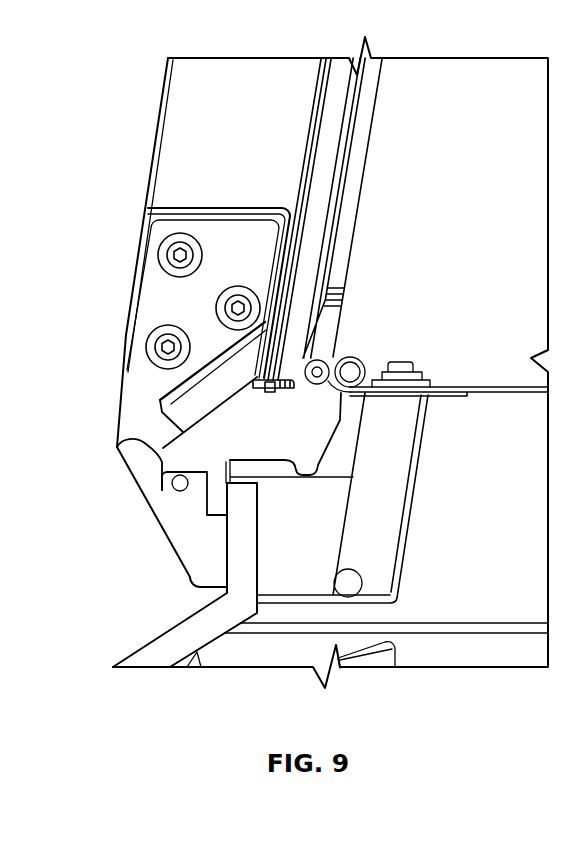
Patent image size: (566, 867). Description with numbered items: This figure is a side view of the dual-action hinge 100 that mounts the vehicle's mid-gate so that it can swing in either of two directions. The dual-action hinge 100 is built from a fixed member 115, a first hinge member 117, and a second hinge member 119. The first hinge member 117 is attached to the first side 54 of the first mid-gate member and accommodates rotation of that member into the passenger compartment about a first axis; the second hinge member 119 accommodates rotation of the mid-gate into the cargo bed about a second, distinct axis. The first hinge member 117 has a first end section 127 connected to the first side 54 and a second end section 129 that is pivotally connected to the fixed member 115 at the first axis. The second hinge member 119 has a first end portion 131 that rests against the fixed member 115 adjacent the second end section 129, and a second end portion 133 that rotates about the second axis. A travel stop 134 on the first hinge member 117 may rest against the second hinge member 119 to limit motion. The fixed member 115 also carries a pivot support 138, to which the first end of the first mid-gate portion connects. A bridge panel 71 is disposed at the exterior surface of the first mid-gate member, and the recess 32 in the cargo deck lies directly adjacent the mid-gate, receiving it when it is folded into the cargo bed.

The first side 54 is at (180, 147).
The bridge panel 71 is at (357, 186).
The first end section 127 is at (163, 283).
The travel stop 134 is at (218, 383).
The first hinge member 117 is at (150, 411).
The first end portion 131 is at (160, 446).
The second end section 129 is at (147, 475).
The pivot support 138 is at (180, 528).
The fixed member 115 is at (183, 576).
The dual-action hinge 100 is at (122, 631).
The second hinge member 119 is at (262, 437).
The second end portion 133 is at (340, 394).
The recess 32 is at (460, 385).